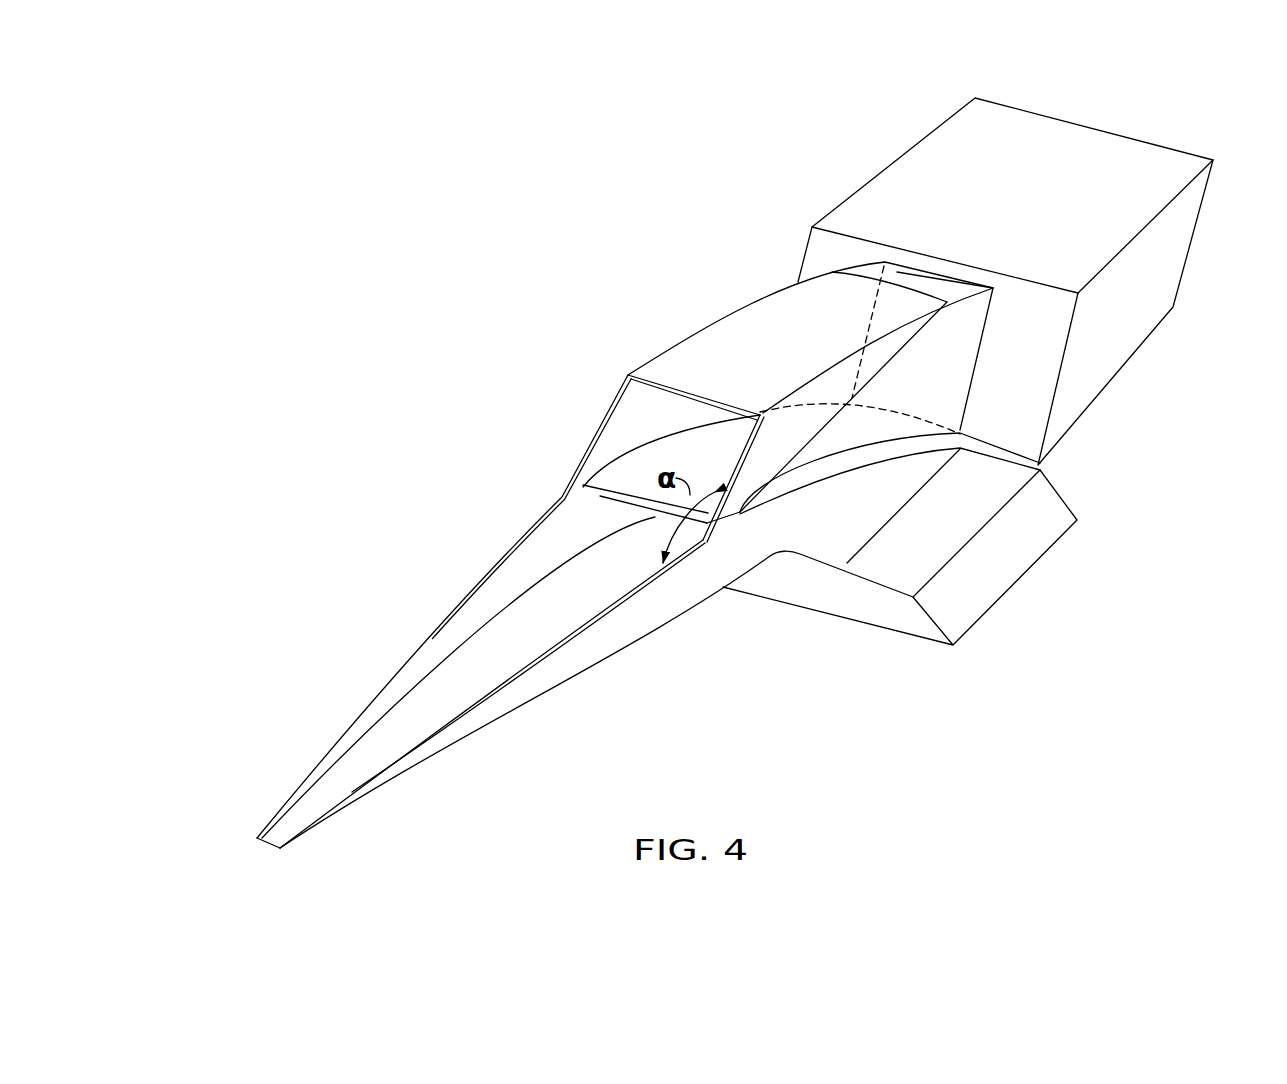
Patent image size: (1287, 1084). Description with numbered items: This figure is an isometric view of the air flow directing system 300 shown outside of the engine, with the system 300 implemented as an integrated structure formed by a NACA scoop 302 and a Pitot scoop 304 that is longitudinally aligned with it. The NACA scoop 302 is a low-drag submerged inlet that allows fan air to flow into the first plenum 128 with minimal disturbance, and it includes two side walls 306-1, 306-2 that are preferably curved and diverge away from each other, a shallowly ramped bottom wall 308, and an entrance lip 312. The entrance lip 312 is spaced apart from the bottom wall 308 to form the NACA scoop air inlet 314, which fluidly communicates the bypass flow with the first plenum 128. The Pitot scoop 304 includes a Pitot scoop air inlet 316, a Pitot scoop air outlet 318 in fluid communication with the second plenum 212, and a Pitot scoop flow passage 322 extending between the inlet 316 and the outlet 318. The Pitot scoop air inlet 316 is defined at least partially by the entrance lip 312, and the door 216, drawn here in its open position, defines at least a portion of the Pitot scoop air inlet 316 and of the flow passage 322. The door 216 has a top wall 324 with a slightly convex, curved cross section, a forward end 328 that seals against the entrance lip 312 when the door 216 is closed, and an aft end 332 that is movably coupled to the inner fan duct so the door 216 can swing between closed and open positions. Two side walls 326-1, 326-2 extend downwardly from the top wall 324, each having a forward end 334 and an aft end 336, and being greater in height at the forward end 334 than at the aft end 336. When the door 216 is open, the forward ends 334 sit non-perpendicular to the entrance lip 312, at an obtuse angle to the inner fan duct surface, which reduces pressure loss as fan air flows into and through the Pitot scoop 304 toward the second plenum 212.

The first plenum 128 is at (995, 600).
The second plenum 212 is at (1133, 316).
The door 216 is at (750, 297).
The air flow directing system 300 is at (322, 394).
The NACA scoop 302 is at (348, 672).
The Pitot scoop 304 is at (557, 427).
The side wall 306-1 is at (540, 645).
The side wall 306-2 is at (473, 592).
The bottom wall 308 is at (407, 728).
The entrance lip 312 is at (562, 498).
The NACA scoop air inlet 314 is at (656, 524).
The Pitot scoop air inlet 316 is at (628, 376).
The Pitot scoop air outlet 318 is at (962, 283).
The Pitot scoop flow passage 322 is at (663, 430).
The top wall 324 is at (837, 333).
The side wall 326-1 is at (787, 428).
The side wall 326-2 is at (623, 400).
The forward end 328 is at (700, 397).
The aft end 332 is at (900, 278).
The forward end 334 is at (575, 477).
The aft end 336 is at (947, 302).